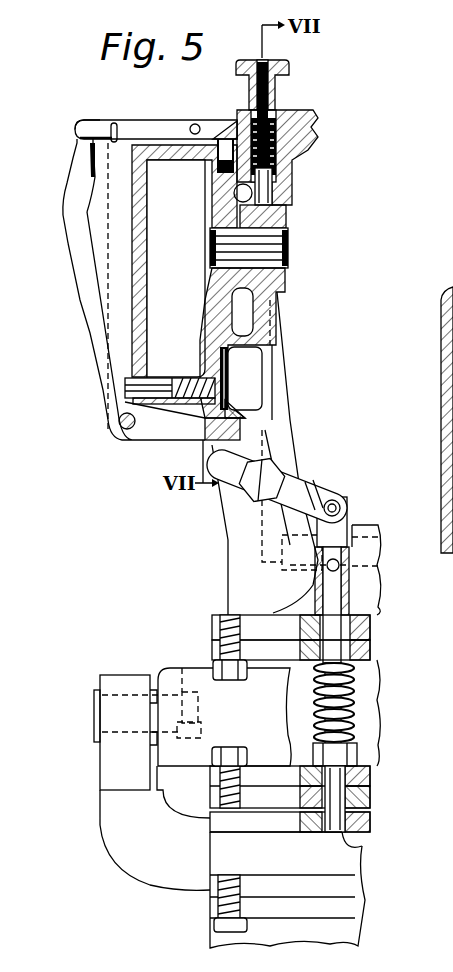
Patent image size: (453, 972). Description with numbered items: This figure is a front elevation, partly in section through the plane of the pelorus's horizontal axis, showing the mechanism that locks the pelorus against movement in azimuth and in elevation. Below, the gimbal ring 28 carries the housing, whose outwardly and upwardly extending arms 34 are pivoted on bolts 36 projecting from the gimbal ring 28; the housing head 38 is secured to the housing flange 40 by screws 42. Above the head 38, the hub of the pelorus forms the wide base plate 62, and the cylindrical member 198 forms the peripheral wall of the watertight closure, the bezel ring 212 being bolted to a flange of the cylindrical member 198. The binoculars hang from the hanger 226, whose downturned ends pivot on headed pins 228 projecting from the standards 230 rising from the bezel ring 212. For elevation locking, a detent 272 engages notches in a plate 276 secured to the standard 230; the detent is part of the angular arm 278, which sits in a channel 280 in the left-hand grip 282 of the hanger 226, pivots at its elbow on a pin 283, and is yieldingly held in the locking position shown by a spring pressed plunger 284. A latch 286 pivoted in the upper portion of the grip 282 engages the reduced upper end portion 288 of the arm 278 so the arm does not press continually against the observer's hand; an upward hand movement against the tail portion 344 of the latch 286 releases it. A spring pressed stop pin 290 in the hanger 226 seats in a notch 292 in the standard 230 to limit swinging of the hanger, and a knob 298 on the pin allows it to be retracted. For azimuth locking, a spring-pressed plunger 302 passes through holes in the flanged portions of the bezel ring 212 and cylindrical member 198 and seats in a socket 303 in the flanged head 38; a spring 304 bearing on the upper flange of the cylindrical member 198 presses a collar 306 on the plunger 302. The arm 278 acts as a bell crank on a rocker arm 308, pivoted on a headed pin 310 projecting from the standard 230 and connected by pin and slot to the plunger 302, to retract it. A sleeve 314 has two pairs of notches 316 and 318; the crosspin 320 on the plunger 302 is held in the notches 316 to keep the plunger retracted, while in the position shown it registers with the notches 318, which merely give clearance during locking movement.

The gimbal ring 28 is at (196, 717).
The arms 34 is at (155, 828).
The bolts 36 is at (95, 712).
The head 38 is at (287, 890).
The flange 40 is at (214, 902).
The screws 42 is at (215, 926).
The base plate 62 is at (370, 799).
The cylindrical member 198 is at (372, 736).
The bezel ring 212 is at (371, 540).
The hanger 226 is at (318, 129).
The headed pins 228 is at (289, 251).
The standards 230 is at (229, 552).
The detent 272 is at (239, 413).
The plate 276 is at (239, 364).
The angular arm 278 is at (92, 367).
The channel 280 is at (141, 262).
The left-hand grip 282 is at (147, 233).
The pin 283 is at (120, 428).
The spring pressed plunger 284 is at (166, 384).
The latch 286 is at (141, 126).
The reduced upper end portion 288 is at (77, 155).
The stop pin 290 is at (273, 192).
The notch 292 is at (287, 215).
The knob 298 is at (275, 101).
The plunger 302 is at (350, 787).
The socket 303 is at (360, 843).
The spring 304 is at (356, 706).
The collar 306 is at (359, 758).
The rocker arm 308 is at (298, 494).
The headed pin 310 is at (272, 472).
The sleeve 314 is at (356, 591).
The notches 316 is at (346, 540).
The notches 318 is at (362, 549).
The crosspin 320 is at (346, 568).
The tail portion 344 is at (90, 125).